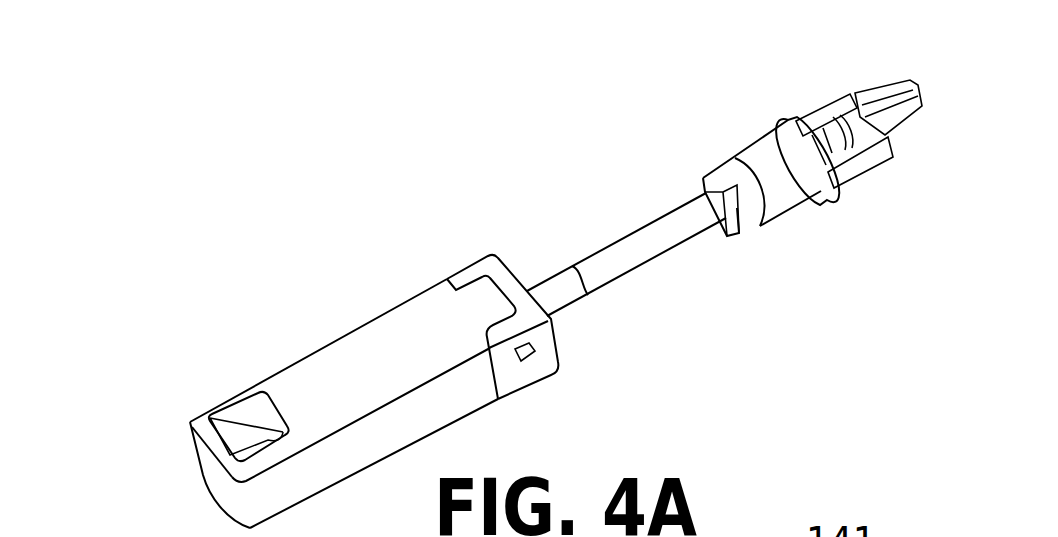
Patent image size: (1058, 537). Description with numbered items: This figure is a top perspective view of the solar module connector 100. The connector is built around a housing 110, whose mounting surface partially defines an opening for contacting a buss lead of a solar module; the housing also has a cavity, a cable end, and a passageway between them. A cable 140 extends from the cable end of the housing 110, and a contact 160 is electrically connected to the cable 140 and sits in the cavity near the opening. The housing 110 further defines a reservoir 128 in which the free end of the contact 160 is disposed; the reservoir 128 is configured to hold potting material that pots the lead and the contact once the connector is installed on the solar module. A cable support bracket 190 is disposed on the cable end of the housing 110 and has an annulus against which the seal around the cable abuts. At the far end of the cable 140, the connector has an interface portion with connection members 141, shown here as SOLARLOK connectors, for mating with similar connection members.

The solar module connector 100 is at (163, 372).
The housing 110 is at (363, 343).
The reservoir 128 is at (247, 413).
The cable 140 is at (663, 240).
The connection members 141 is at (749, 138).
The contact 160 is at (193, 422).
The cable support bracket 190 is at (487, 258).